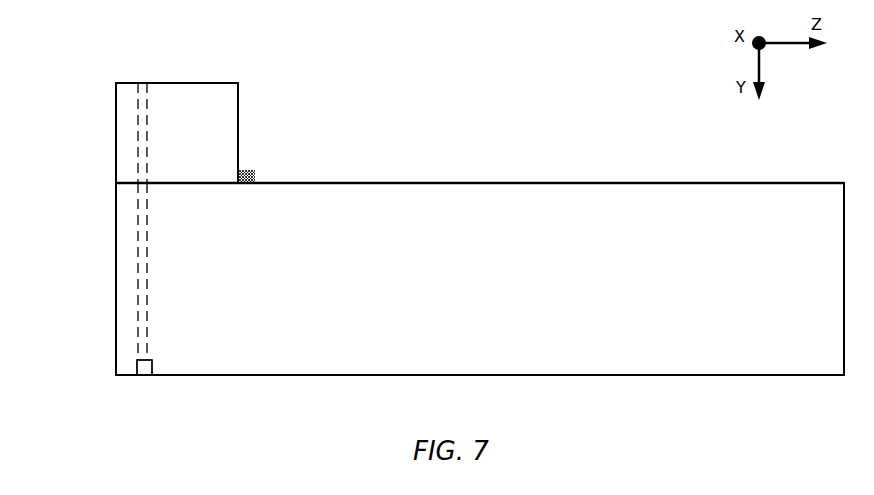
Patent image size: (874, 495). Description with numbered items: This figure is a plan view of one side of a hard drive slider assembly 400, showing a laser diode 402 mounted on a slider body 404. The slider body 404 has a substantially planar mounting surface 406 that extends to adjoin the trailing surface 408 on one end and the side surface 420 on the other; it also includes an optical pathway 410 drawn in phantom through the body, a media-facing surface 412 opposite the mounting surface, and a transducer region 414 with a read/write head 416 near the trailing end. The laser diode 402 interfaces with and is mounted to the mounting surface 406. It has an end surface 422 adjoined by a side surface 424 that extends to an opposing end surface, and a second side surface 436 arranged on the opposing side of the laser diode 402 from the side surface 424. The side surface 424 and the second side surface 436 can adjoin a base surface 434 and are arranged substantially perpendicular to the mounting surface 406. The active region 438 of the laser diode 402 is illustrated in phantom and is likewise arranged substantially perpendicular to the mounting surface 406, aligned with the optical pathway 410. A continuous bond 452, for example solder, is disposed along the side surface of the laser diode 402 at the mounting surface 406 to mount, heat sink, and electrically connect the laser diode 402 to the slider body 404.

The slider assembly 400 is at (446, 38).
The laser diode 402 is at (266, 64).
The slider body 404 is at (436, 147).
The mounting surface 406 is at (302, 183).
The trailing surface 408 is at (116, 283).
The optical pathway 410 is at (147, 262).
The media-facing surface 412 is at (602, 375).
The transducer region 414 is at (138, 377).
The read/write head 416 is at (148, 378).
The side surface 420 is at (495, 286).
The end surface 422 is at (200, 143).
The side surface 424 is at (116, 130).
The base surface 434 is at (128, 186).
The second side surface 436 is at (240, 140).
The active region 438 is at (147, 120).
The continuous bond 452 is at (253, 170).